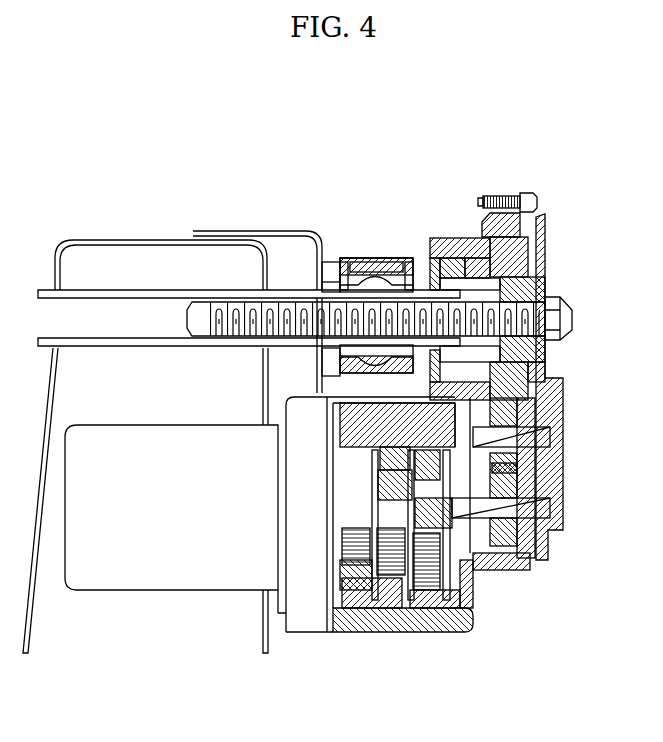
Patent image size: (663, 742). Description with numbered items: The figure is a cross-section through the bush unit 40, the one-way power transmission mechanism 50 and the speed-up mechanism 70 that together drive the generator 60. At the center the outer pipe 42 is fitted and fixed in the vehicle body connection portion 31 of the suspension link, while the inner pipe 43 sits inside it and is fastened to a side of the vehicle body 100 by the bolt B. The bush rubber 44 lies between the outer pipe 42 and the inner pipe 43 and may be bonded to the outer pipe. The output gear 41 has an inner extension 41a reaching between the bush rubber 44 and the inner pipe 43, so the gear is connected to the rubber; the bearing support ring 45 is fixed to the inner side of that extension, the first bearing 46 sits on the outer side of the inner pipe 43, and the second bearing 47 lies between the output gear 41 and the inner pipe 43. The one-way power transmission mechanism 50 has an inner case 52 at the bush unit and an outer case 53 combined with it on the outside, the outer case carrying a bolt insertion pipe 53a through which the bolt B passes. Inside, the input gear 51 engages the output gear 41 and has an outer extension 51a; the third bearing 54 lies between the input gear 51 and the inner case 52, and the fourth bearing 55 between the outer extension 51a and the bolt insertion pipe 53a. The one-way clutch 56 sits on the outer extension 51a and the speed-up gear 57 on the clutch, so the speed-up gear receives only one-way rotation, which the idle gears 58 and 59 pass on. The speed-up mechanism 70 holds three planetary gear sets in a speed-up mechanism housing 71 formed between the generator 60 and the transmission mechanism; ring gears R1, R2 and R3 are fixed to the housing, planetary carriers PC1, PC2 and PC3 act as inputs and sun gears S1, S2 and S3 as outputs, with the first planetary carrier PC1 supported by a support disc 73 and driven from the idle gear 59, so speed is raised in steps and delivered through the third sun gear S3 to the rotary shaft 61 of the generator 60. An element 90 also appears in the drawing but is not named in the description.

The vehicle body 100 is at (104, 240).
The cover 90 is at (263, 223).
The inner pipe 43 is at (330, 270).
The first bearing 46 is at (343, 267).
The inner extension 41a is at (353, 260).
The outer pipe 42 is at (360, 262).
The bush unit 40 is at (379, 243).
The bush rubber 44 is at (392, 262).
The bearing support ring 45 is at (407, 262).
The vehicle body connection portion 31 is at (388, 258).
The second bearing 47 is at (432, 253).
The output gear 41 is at (442, 243).
The inner case 52 is at (453, 243).
The input gear 51 is at (467, 243).
The third bearing 54 is at (477, 235).
The speed-up gear 57 is at (515, 235).
The one-way power transmission mechanism 50 is at (518, 347).
The outer case 53 is at (540, 228).
The outer extension 51a is at (528, 303).
The bolt B is at (572, 313).
The bolt insertion pipe 53a is at (533, 355).
The fourth bearing 55 is at (540, 372).
The one-way clutch 56 is at (517, 387).
The idle gear 58 is at (477, 433).
The support disc 73 is at (527, 420).
The idle gear 59 is at (520, 528).
The sun gear S1 is at (430, 513).
The first planetary carrier PC1 is at (443, 565).
The planetary carrier PC2 is at (453, 570).
The speed-up mechanism housing 71 is at (452, 615).
The ring gear R1 is at (428, 586).
The speed-up mechanism 70 is at (416, 547).
The ring gear R2 is at (396, 575).
The planetary carrier PC3 is at (398, 577).
The ring gear R3 is at (357, 563).
The third sun gear S3 is at (343, 570).
The rotary shaft 61 is at (347, 507).
The generator 60 is at (176, 598).
The sun gear S2 is at (387, 488).